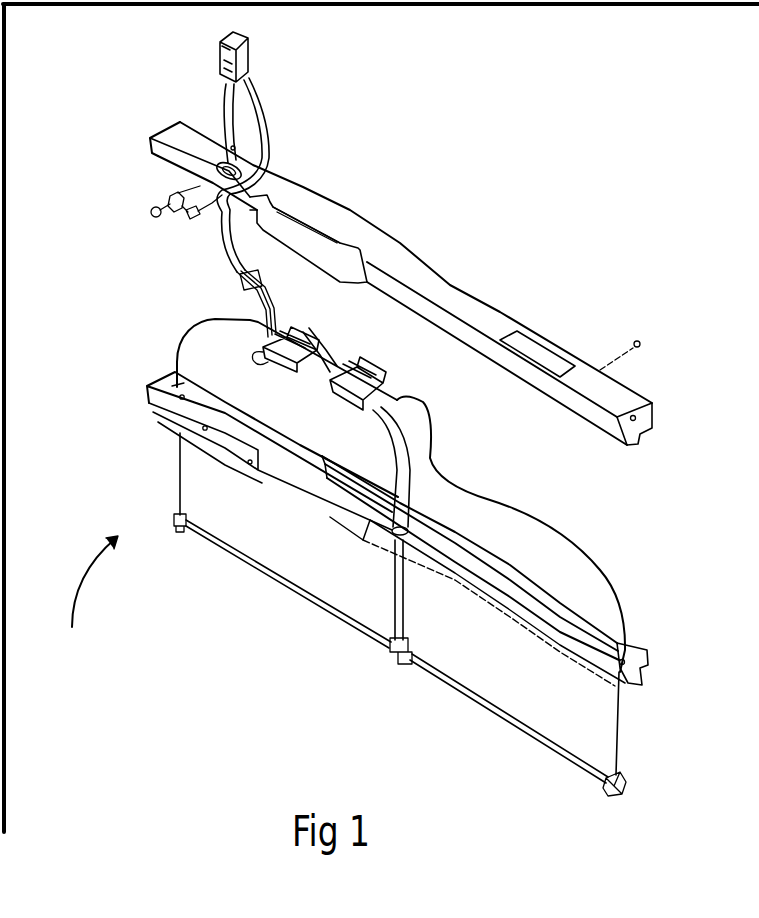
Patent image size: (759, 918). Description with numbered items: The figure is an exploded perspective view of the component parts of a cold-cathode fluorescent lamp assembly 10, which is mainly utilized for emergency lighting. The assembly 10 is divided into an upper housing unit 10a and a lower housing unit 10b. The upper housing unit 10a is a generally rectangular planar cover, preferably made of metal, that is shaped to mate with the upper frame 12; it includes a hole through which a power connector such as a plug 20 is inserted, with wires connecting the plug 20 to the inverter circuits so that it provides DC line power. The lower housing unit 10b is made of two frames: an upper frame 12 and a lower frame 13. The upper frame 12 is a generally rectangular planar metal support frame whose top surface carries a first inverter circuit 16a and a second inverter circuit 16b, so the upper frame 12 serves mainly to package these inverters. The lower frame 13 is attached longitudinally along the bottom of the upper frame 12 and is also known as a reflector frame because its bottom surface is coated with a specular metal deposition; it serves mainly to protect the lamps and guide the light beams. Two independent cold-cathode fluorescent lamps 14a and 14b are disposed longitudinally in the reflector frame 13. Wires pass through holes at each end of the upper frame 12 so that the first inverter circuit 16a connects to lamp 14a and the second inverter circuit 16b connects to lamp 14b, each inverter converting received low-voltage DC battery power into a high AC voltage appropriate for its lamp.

The cold-cathode fluorescent lamp assembly 10 is at (341, 495).
The upper housing unit 10a is at (480, 297).
The lower housing unit 10b is at (163, 380).
The upper frame 12 is at (537, 593).
The lower frame 13 is at (623, 722).
The cold-cathode fluorescent lamp 14a is at (288, 590).
The cold-cathode fluorescent lamp 14b is at (481, 713).
The first inverter circuit 16a is at (317, 347).
The second inverter circuit 16b is at (383, 375).
The plug 20 is at (250, 50).